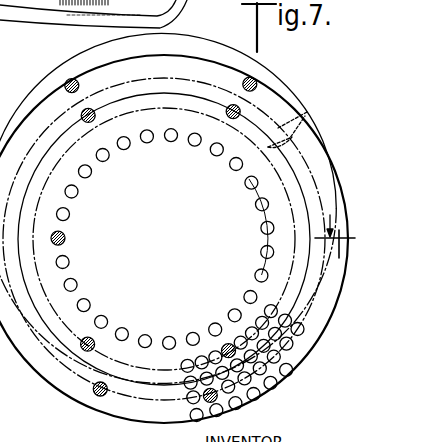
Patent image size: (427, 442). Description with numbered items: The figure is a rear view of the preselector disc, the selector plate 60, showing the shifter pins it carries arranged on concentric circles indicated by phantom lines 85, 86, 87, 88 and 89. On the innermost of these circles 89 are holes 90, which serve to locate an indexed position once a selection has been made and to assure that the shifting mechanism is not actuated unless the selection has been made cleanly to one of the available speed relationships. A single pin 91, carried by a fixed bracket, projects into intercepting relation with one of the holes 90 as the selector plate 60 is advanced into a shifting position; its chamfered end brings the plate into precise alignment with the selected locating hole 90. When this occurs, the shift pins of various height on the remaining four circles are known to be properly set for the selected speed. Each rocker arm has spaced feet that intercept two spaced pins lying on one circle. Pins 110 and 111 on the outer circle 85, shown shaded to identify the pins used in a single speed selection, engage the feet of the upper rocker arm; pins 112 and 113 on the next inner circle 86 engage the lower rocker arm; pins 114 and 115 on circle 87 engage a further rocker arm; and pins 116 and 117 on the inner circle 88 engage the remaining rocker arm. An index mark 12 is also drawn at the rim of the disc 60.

The index mark 12 is at (335, 238).
The selector plate 60 is at (67, 400).
The outer concentric circle 85 is at (296, 110).
The next inner concentric circle 86 is at (309, 113).
The next concentric circle 87 is at (300, 132).
The inner concentric circle 88 is at (244, 183).
The inner circle of holes 89 is at (255, 203).
The holes 90 is at (152, 334).
The pin 91 is at (65, 240).
The pin 110 is at (74, 79).
The pin 111 is at (256, 80).
The pin 112 is at (101, 397).
The pin 113 is at (226, 406).
The pin 114 is at (92, 110).
The pin 115 is at (233, 104).
The pin 116 is at (90, 337).
The pin 117 is at (227, 344).